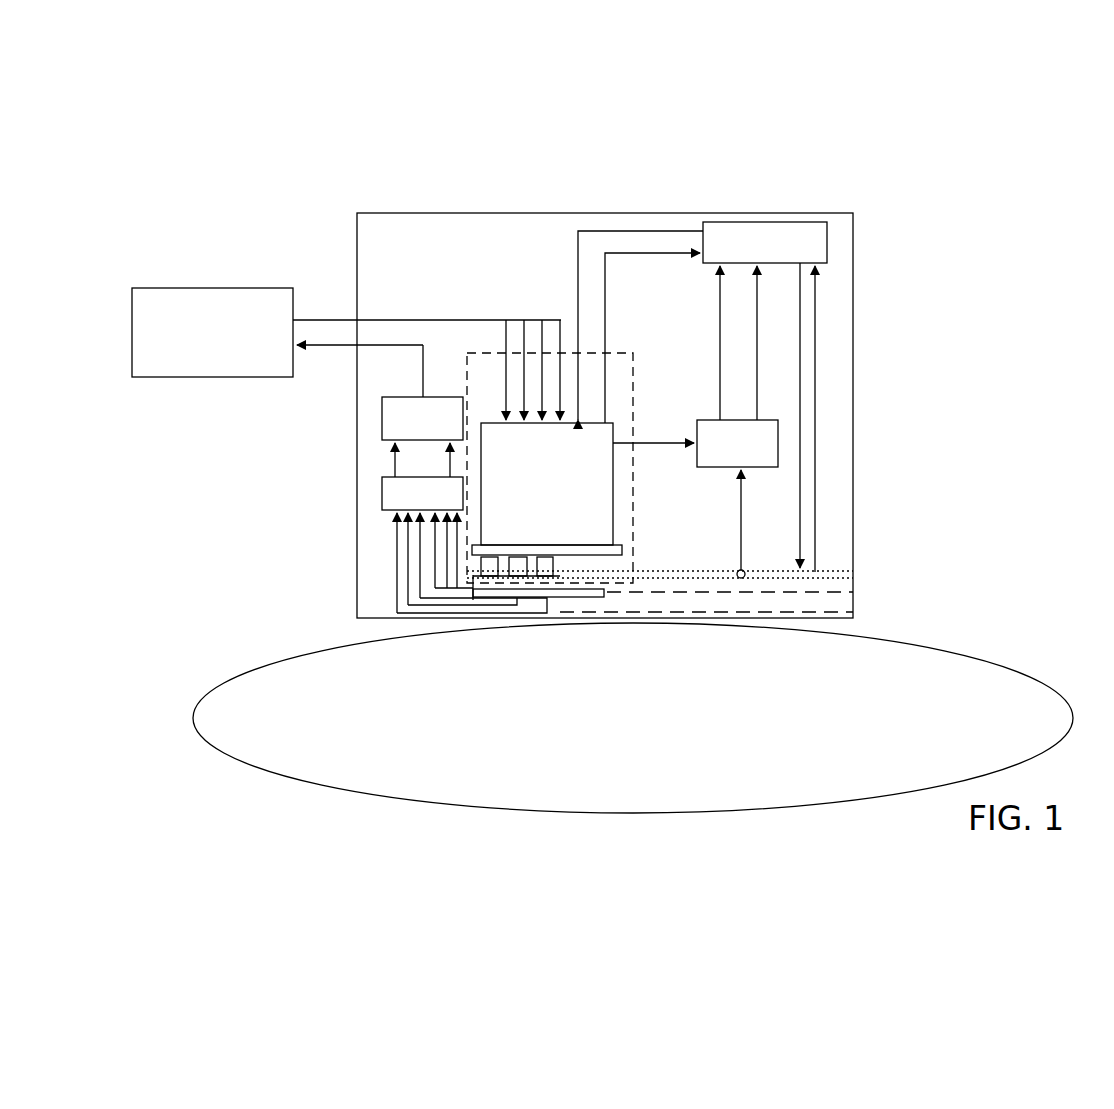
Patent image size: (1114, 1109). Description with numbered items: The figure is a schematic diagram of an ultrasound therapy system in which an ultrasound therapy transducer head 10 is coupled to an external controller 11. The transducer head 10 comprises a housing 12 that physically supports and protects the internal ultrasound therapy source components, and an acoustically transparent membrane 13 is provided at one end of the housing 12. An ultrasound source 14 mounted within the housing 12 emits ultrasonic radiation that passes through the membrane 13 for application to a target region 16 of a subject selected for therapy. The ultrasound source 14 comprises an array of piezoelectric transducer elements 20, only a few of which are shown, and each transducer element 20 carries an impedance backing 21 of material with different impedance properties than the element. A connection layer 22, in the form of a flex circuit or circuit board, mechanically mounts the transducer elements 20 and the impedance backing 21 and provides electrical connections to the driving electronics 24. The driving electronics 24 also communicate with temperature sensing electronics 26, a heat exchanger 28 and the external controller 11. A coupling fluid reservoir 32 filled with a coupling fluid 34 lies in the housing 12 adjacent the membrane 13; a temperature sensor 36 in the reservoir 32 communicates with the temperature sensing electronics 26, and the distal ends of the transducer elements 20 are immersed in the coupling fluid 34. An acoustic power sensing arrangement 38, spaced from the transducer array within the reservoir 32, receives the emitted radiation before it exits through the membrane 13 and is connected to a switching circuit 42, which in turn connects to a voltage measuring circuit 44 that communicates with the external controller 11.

The ultrasound therapy transducer head 10 is at (712, 176).
The external controller 11 is at (183, 288).
The housing 12 is at (454, 200).
The acoustically transparent membrane 13 is at (240, 763).
The ultrasound source 14 is at (613, 348).
The target region 16 is at (530, 782).
The piezoelectric transducer element 20 is at (518, 563).
The impedance backing 21 is at (543, 560).
The connection layer 22 is at (578, 552).
The driving electronics 24 is at (512, 447).
The temperature sensing electronics 26 is at (770, 420).
The heat exchanger 28 is at (827, 248).
The coupling fluid reservoir 32 is at (822, 600).
The coupling fluid 34 is at (777, 600).
The temperature sensor 36 is at (744, 570).
The acoustic power sensing arrangement 38 is at (588, 596).
The switching circuit 42 is at (382, 500).
The voltage measuring circuit 44 is at (382, 408).